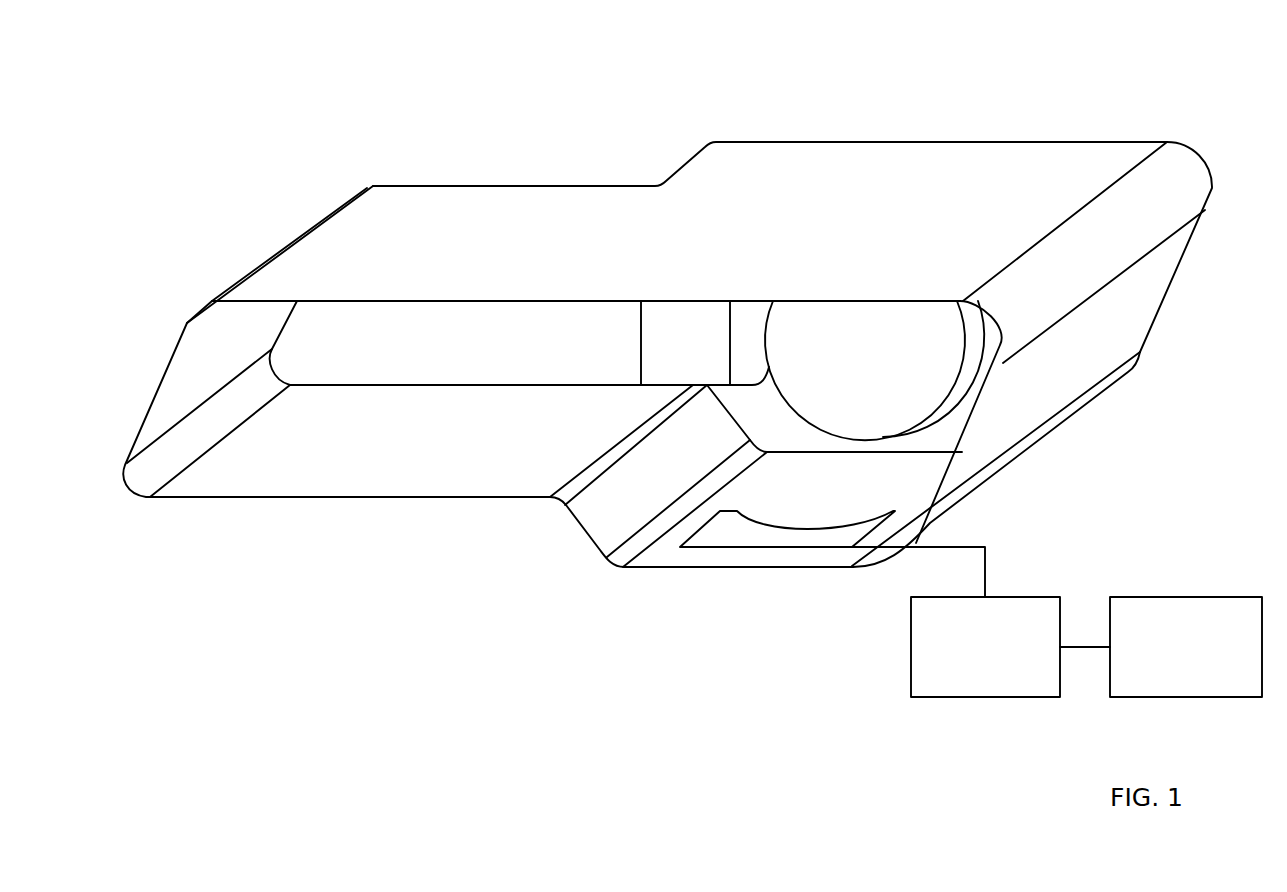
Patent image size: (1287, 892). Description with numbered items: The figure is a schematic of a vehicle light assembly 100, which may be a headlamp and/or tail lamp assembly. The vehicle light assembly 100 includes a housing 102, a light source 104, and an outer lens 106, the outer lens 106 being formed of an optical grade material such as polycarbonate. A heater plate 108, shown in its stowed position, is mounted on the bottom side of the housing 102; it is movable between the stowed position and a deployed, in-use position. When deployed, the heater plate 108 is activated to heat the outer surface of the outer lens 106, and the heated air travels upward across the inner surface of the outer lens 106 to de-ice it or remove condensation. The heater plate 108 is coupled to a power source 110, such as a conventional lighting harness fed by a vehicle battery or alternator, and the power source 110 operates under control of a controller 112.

The vehicle light assembly 100 is at (172, 124).
The housing 102 is at (1211, 183).
The light source 104 is at (812, 424).
The outer lens 106 is at (350, 445).
The heater plate 108 is at (838, 528).
The power source 110 is at (985, 647).
The controller 112 is at (1186, 647).